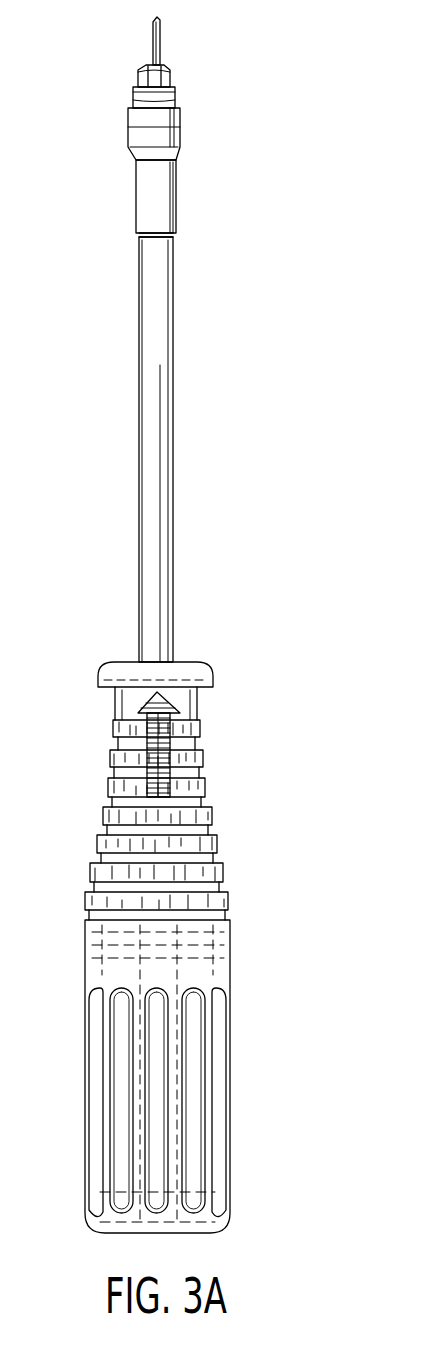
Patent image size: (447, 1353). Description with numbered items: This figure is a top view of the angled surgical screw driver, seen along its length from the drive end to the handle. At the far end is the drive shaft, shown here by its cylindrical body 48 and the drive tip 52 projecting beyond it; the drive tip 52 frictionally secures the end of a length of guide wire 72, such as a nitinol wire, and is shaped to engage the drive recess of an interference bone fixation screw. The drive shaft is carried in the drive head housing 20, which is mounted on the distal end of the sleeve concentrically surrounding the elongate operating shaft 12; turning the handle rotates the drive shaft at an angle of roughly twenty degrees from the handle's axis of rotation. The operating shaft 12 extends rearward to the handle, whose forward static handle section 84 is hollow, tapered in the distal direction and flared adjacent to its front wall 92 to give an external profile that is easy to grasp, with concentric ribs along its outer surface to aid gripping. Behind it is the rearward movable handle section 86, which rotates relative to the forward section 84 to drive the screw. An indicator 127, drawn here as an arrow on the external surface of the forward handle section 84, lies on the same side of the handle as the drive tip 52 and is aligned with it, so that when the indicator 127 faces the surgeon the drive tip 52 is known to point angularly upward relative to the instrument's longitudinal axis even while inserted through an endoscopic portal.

The guide wire 72 is at (161, 44).
The drive tip 52 is at (172, 70).
The cylindrical body 48 is at (178, 97).
The drive head housing 20 is at (130, 147).
The operating shaft 12 is at (173, 440).
The front wall 92 is at (186, 662).
The indicator 127 is at (162, 700).
The forward static handle section 84 is at (203, 772).
The rearward movable handle section 86 is at (230, 1112).